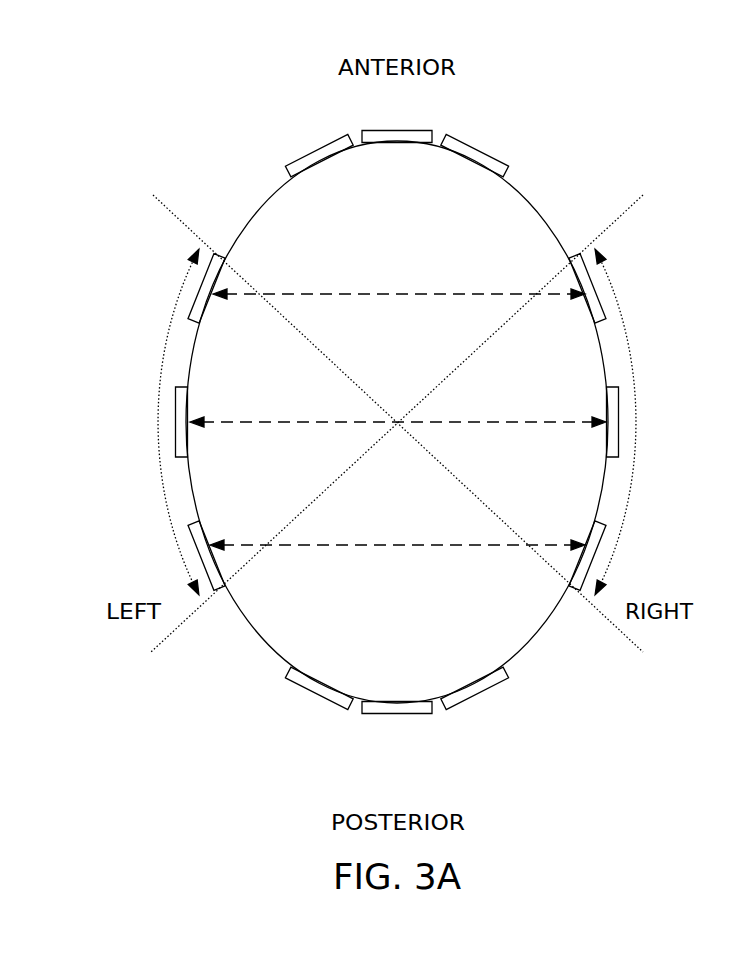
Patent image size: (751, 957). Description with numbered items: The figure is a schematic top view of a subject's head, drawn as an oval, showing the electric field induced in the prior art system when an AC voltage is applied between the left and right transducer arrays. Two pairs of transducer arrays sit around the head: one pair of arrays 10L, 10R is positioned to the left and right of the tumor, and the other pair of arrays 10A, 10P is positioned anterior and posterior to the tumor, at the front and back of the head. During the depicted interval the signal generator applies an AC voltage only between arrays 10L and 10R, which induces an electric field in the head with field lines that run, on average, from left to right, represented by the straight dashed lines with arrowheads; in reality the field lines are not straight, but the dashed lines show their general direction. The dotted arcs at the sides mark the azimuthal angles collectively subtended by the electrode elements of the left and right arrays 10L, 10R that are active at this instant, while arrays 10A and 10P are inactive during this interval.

The anterior transducer array 10A is at (503, 105).
The posterior transducer array 10P is at (321, 765).
The left transducer array 10L is at (157, 235).
The right transducer array 10R is at (621, 238).